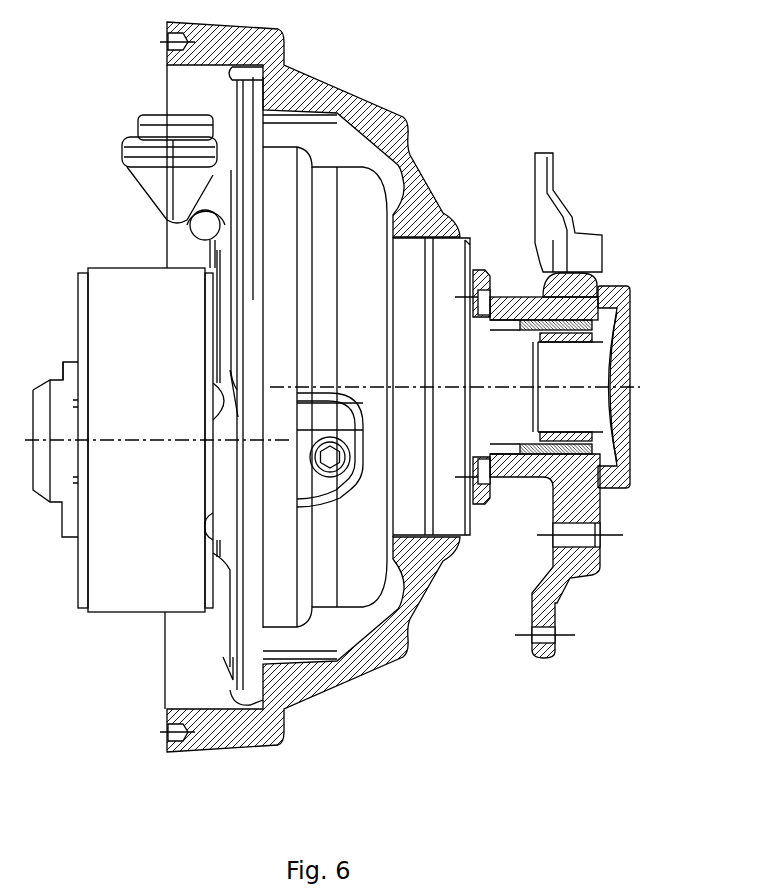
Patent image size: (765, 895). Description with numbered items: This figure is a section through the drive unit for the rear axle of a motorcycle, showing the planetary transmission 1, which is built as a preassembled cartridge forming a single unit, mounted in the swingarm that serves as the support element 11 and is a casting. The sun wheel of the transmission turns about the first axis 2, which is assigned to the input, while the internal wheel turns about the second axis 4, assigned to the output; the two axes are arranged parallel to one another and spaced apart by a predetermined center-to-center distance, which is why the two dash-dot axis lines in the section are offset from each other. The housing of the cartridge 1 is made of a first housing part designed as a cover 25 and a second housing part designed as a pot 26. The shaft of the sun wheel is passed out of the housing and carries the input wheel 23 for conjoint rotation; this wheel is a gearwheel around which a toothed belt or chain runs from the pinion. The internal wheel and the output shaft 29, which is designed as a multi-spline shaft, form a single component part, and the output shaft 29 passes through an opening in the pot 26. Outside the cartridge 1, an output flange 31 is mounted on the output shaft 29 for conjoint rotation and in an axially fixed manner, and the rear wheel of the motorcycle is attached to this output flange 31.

The planetary transmission 1 is at (393, 187).
The first axis 2 is at (105, 440).
The second axis 4 is at (567, 385).
The support element 11 is at (317, 103).
The input wheel 23 is at (107, 597).
The cover 25 is at (235, 677).
The pot 26 is at (352, 583).
The output shaft 29 is at (503, 330).
The output flange 31 is at (548, 590).